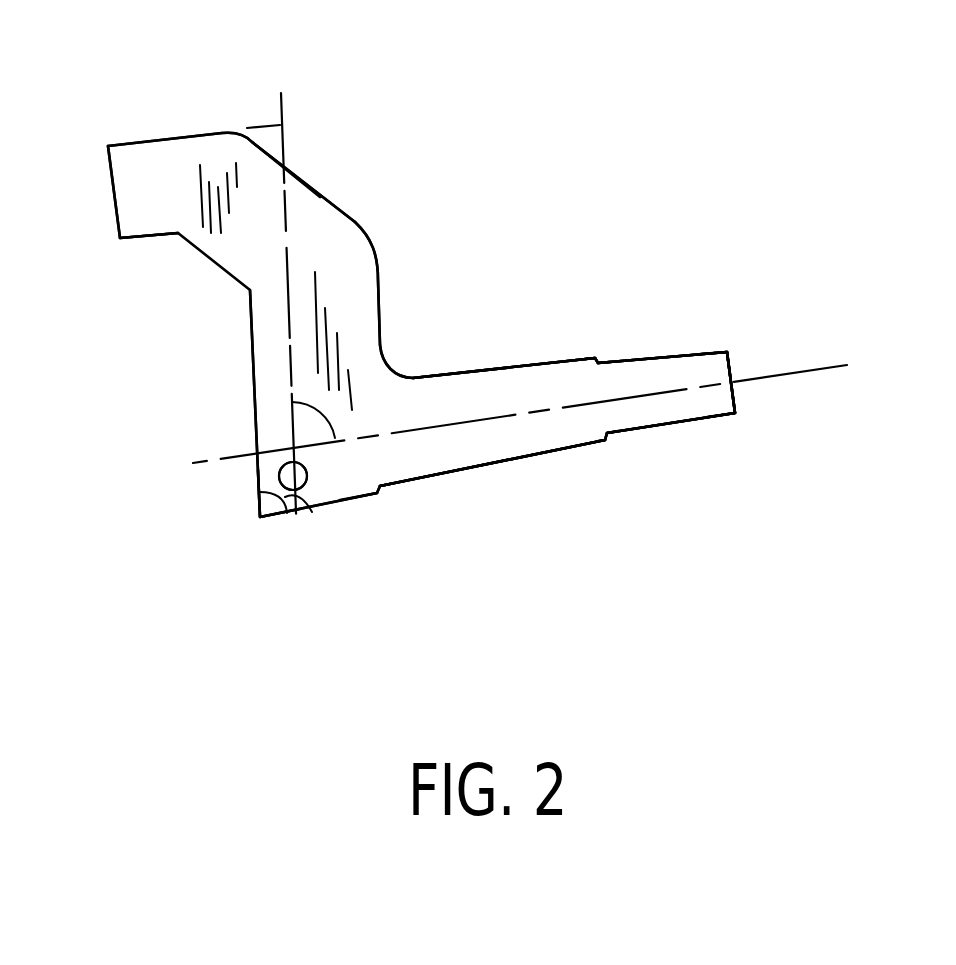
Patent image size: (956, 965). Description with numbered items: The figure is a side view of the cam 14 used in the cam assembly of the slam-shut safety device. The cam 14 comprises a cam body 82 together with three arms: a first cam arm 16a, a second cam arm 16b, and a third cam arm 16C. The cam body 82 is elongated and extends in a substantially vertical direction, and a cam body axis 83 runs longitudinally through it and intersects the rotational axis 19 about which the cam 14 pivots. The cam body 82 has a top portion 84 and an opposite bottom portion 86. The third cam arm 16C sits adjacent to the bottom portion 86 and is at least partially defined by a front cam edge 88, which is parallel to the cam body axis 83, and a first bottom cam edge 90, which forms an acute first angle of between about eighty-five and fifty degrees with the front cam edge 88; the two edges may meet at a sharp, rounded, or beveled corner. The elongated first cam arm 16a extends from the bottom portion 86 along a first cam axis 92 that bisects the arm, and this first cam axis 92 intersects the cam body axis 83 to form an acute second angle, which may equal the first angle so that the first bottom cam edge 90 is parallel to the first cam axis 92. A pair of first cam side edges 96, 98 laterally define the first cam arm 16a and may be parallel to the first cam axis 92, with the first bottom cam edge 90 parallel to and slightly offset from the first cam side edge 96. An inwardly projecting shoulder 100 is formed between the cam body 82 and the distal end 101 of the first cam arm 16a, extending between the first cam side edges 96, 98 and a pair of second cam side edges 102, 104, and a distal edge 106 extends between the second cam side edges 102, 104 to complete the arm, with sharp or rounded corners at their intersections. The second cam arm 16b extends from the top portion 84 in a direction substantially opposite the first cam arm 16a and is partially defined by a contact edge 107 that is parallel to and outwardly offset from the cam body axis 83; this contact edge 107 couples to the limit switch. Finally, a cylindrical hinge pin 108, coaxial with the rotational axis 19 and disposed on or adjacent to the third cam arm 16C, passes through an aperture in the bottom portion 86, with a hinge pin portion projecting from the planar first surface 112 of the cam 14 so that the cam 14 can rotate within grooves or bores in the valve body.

The cam 14 is at (86, 78).
The first cam arm 16a is at (617, 413).
The second cam arm 16b is at (167, 177).
The third cam arm 16C is at (307, 497).
The rotational axis 19 is at (262, 489).
The cam body 82 is at (340, 302).
The cam body axis 83 is at (282, 108).
The top portion 84 is at (307, 250).
The bottom portion 86 is at (347, 468).
The front cam edge 88 is at (280, 478).
The first bottom cam edge 90 is at (360, 503).
The first cam axis 92 is at (782, 373).
The first cam side edge 96 is at (493, 467).
The first cam side edge 98 is at (450, 370).
The inwardly projecting shoulder 100 is at (597, 360).
The distal end 101 is at (713, 395).
The second cam side edge 102 is at (667, 427).
The second cam side edge 104 is at (668, 355).
The distal edge 106 is at (729, 366).
The contact edge 107 is at (110, 203).
The hinge pin 108 is at (270, 462).
The first surface 112 is at (500, 413).